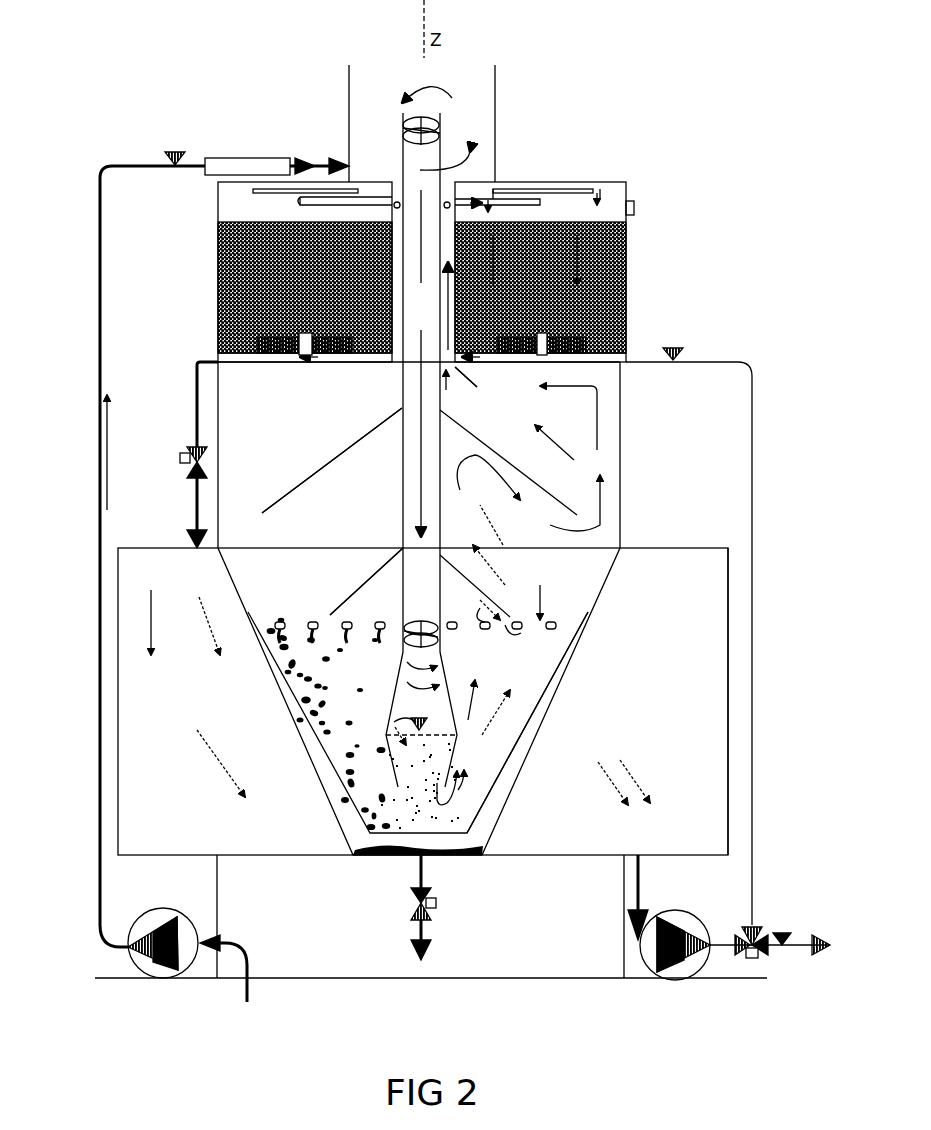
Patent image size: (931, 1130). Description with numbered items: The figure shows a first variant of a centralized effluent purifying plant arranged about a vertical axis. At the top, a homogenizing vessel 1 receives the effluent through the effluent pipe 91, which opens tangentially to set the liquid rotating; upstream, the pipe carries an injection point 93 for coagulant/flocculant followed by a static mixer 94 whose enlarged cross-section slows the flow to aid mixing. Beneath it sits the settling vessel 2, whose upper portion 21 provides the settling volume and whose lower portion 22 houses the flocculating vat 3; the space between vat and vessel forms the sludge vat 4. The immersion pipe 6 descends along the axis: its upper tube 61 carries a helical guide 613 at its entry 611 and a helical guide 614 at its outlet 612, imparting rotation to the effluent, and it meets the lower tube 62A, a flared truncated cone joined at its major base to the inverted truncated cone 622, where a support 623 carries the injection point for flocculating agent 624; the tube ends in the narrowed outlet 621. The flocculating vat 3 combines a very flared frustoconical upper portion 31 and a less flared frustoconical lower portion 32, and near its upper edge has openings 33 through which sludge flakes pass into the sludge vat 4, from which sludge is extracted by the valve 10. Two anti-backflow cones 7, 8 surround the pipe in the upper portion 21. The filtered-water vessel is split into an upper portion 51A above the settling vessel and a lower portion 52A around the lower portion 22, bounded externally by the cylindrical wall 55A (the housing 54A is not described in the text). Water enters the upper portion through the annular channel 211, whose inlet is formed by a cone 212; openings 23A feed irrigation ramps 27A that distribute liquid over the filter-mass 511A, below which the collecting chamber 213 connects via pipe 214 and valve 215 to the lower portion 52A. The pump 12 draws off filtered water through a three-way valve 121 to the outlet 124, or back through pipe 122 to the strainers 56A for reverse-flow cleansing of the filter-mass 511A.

The homogenizing vessel 1 is at (349, 85).
The settling vessel 2 is at (218, 410).
The flocculating vat 3 is at (488, 677).
The sludge vat 4 is at (510, 768).
The immersion pipe 6 is at (447, 379).
The fixed anti-backflow cone 7 is at (368, 575).
The adjustable anti-backflow cone 8 is at (320, 468).
The valve 10 is at (436, 902).
The pump 12 is at (172, 908).
The upper portion 21 is at (218, 432).
The lower portion 22 is at (303, 740).
The openings 23A is at (397, 202).
The irrigation ramps 27A is at (286, 193).
The frustoconical upper portion 31 is at (548, 670).
The frustoconical lower portion 32 is at (480, 778).
The openings 33 is at (563, 620).
The upper portion of the filtered-water vessel 51A is at (417, 243).
The lower portion of the filtered-water vessel 52A is at (423, 701).
The filter housing 54A is at (218, 292).
The circular cylindrical wall 55A is at (728, 688).
The strainers 56A is at (333, 334).
The upper tube 61 is at (403, 530).
The lower tube 62A is at (458, 707).
The effluent pipe 91 is at (334, 164).
The injection point 93 is at (175, 152).
The static mixer 94 is at (250, 158).
The three-way valve 121 is at (748, 925).
The pipe 122 is at (752, 490).
The outlet 124 is at (801, 950).
The annular channel 211 is at (396, 362).
The cone 212 is at (372, 362).
The collecting chamber 213 is at (285, 362).
The pipe 214 is at (197, 398).
The valve 215 is at (180, 458).
The filter-mass 511A is at (417, 270).
The entry 611 is at (440, 118).
The outlet 612 is at (440, 645).
The helical guide 613 is at (415, 112).
The helical guide 614 is at (407, 650).
The narrowed outlet 621 is at (431, 788).
The truncated cone 622 is at (398, 774).
The support 623 is at (394, 735).
The injection point for flocculating agent 624 is at (421, 720).